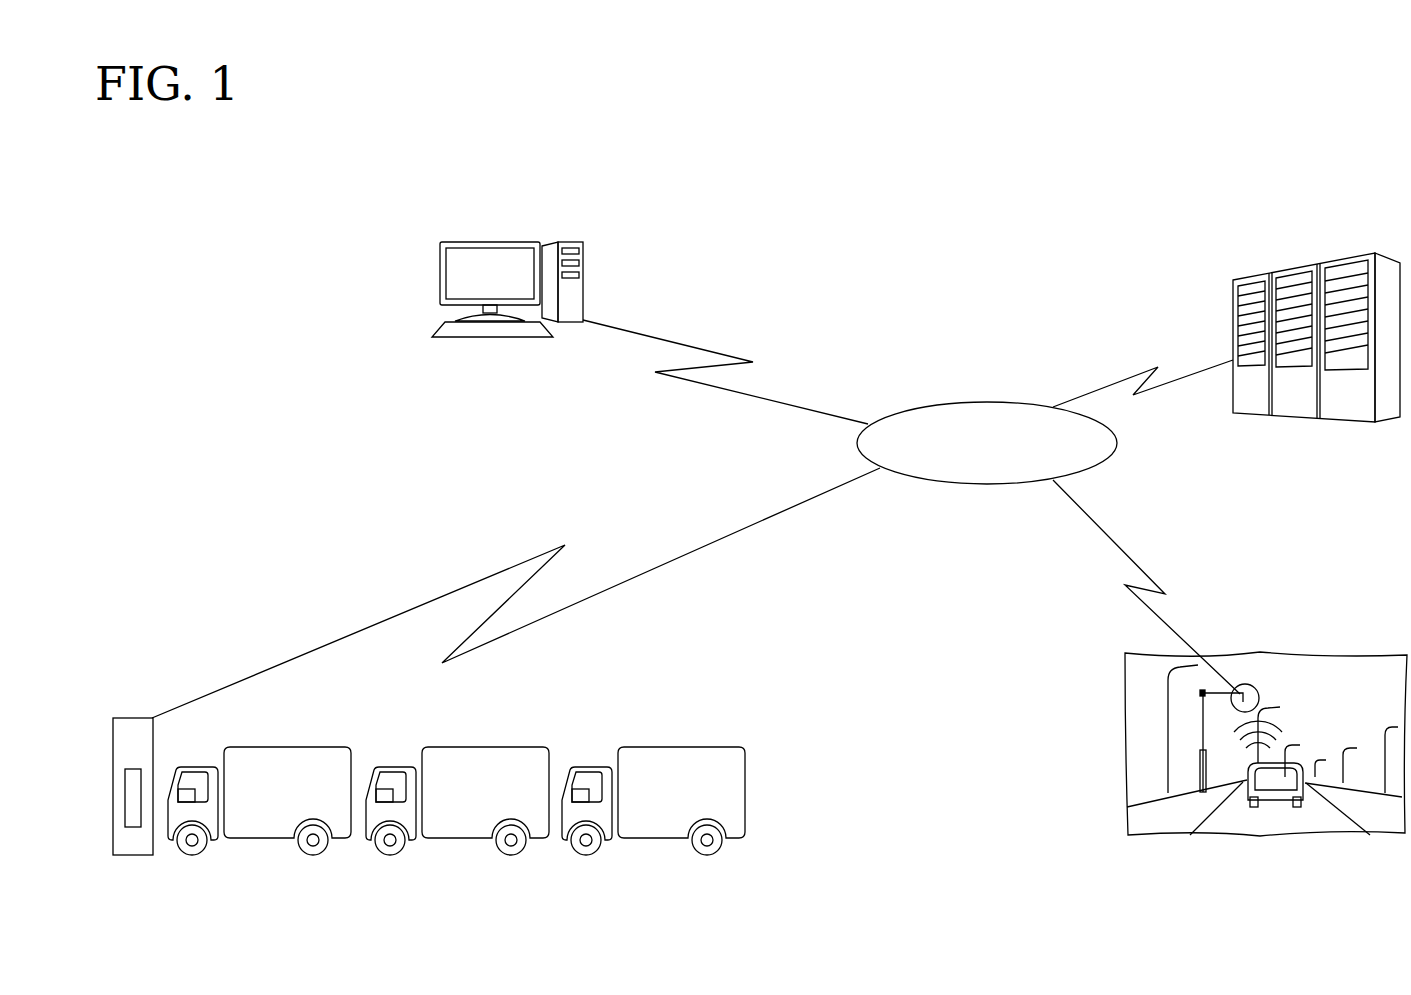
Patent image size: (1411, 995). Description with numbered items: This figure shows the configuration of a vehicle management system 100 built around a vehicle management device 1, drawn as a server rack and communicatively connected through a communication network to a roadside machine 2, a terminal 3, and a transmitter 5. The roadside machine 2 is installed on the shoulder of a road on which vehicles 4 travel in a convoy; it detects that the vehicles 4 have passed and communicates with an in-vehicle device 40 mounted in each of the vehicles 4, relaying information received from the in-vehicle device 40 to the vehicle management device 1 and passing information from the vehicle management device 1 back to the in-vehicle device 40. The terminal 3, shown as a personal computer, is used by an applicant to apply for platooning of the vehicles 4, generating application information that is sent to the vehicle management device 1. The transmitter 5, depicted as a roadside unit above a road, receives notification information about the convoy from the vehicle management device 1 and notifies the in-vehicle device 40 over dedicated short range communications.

The vehicle management system 100 is at (943, 206).
The vehicle management device 1 is at (1298, 269).
The roadside machine 2 is at (128, 718).
The terminal 3 is at (492, 242).
The vehicle 4 is at (290, 747).
The in-vehicle device 40 is at (188, 789).
The transmitter 5 is at (1250, 684).